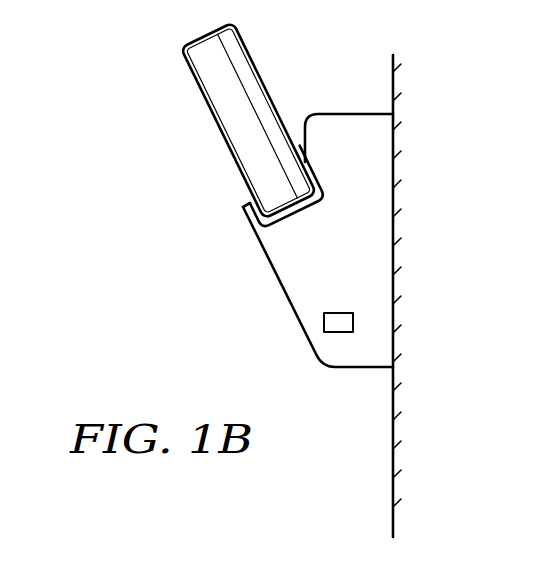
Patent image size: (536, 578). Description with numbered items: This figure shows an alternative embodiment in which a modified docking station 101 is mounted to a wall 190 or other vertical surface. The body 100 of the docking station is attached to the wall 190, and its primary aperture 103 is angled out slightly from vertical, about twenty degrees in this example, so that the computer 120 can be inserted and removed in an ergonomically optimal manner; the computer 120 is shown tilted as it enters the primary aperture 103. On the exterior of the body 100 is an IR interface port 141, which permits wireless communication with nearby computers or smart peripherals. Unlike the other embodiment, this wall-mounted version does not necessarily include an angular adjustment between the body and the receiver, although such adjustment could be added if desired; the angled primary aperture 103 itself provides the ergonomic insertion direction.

The body 100 is at (285, 263).
The modified docking station 101 is at (366, 256).
The primary aperture 103 is at (277, 203).
The computer 120 is at (195, 93).
The IR interface ports 141 is at (326, 324).
The wall 190 is at (394, 466).